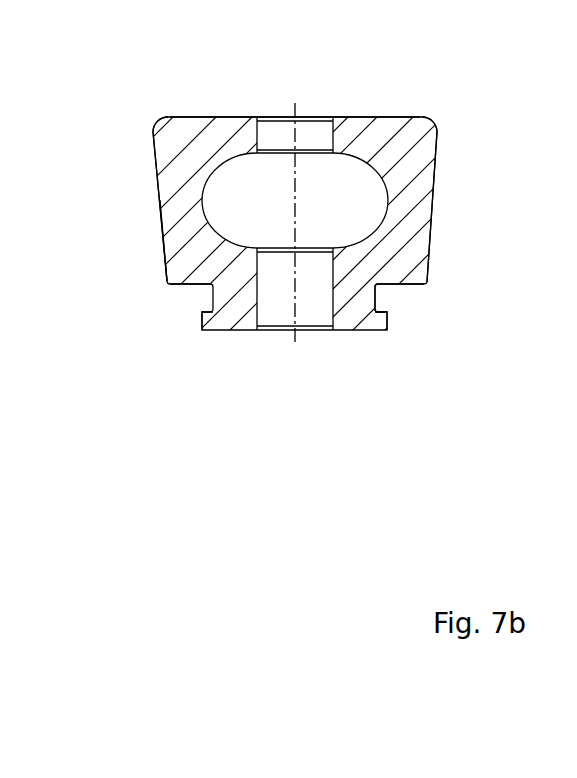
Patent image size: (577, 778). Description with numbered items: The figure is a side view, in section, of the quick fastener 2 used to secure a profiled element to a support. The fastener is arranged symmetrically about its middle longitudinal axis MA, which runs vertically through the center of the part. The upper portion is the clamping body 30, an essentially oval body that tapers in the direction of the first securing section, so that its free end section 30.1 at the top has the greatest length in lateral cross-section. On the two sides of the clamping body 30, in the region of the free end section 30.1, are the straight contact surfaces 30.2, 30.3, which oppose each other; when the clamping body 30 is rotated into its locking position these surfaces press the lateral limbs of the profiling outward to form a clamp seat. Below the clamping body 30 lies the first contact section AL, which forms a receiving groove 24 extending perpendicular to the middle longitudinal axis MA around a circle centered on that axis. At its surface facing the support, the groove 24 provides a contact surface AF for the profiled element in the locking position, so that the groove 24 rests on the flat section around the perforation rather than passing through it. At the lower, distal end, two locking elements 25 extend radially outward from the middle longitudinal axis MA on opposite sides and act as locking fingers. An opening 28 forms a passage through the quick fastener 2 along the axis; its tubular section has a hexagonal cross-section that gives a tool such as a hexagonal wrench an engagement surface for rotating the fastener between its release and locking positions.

The quick fastener 2 is at (175, 240).
The receiving groove 24 is at (397, 302).
The locking elements 25 is at (217, 325).
The opening 28 is at (265, 324).
The clamping body 30 is at (152, 172).
The free end section 30.1 is at (175, 112).
The straight contact surface 30.2 is at (148, 133).
The straight contact surface 30.3 is at (447, 135).
The middle longitudinal axis MA is at (297, 208).
The first contact section AL is at (156, 273).
The contact surface AF is at (180, 288).